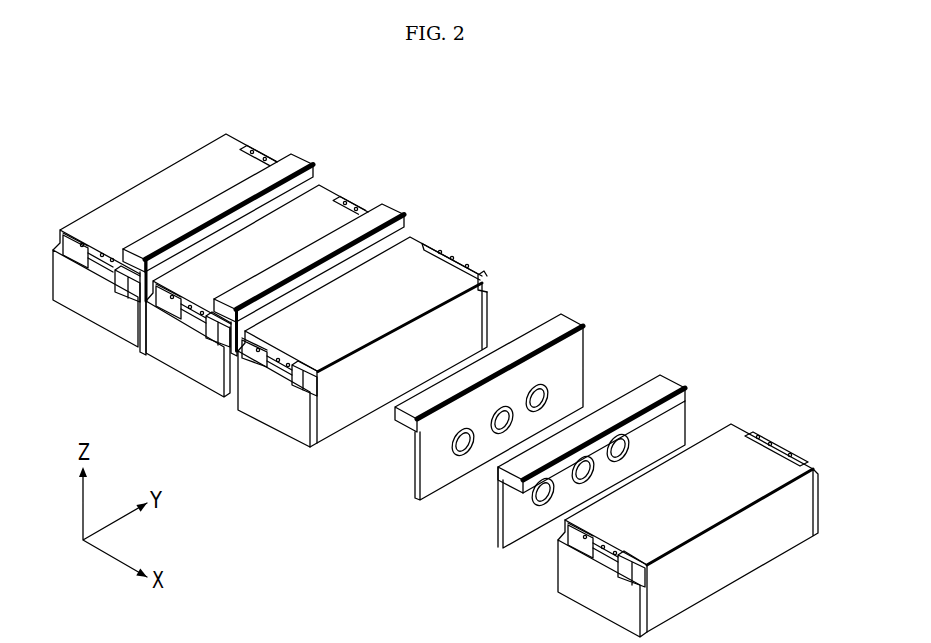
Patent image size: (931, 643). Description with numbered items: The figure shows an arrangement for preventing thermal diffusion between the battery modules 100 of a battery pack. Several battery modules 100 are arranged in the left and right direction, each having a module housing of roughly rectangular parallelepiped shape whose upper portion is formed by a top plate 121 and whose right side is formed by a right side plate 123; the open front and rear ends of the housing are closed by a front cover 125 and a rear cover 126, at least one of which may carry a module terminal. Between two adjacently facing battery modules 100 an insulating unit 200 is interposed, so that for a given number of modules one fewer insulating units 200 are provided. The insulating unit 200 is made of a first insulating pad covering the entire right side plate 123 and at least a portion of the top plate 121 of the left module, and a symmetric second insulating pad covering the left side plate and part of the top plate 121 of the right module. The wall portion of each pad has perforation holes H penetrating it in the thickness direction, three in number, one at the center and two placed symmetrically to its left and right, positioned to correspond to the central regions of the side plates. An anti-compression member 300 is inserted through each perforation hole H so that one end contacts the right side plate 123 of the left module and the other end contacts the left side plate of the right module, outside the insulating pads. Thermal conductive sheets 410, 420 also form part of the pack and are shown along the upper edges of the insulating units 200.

The battery module 100 is at (231, 165).
The top plate 121 is at (425, 266).
The right side plate 123 is at (332, 417).
The front cover 125 is at (258, 400).
The rear cover 126 is at (489, 305).
The insulating unit 200 is at (391, 336).
The anti-compression member 300 is at (535, 460).
The thermal conductive sheet 410 is at (560, 318).
The thermal conductive sheet 420 is at (665, 386).
The perforation hole H is at (547, 395).